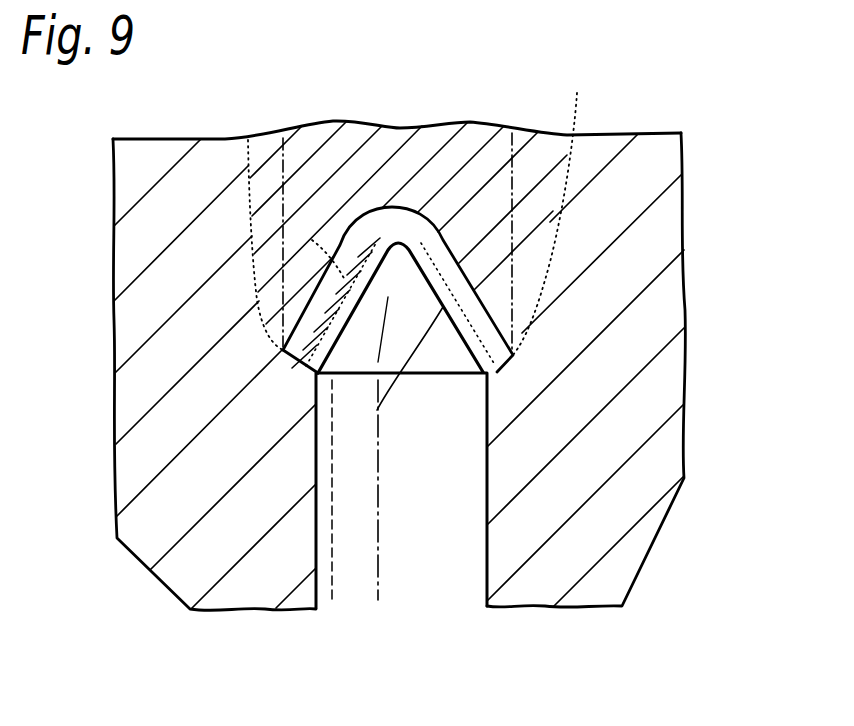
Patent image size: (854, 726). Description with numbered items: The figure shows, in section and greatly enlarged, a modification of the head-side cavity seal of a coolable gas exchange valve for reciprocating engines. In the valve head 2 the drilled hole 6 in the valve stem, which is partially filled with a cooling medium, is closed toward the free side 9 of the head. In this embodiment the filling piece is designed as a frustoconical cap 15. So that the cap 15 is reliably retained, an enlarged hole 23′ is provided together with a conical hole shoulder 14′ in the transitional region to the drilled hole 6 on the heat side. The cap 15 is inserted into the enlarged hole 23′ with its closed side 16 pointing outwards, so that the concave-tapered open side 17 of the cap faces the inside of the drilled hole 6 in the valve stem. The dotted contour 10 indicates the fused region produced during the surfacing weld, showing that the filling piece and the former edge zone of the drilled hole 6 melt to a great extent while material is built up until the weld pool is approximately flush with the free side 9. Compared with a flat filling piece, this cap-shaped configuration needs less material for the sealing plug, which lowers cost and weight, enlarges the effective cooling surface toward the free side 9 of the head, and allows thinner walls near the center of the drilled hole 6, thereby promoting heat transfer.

The valve head 2 is at (707, 132).
The drilled hole 6 is at (488, 549).
The free side of the head 9 is at (660, 134).
The contour of the fused region 10 is at (421, 209).
The conical hole shoulder 14′ is at (488, 362).
The frustoconical cap 15 is at (347, 490).
The closed side of the cap 16 is at (335, 220).
The concave-tapered open side of the cap 17 is at (472, 350).
The enlarged hole 23′ is at (282, 175).